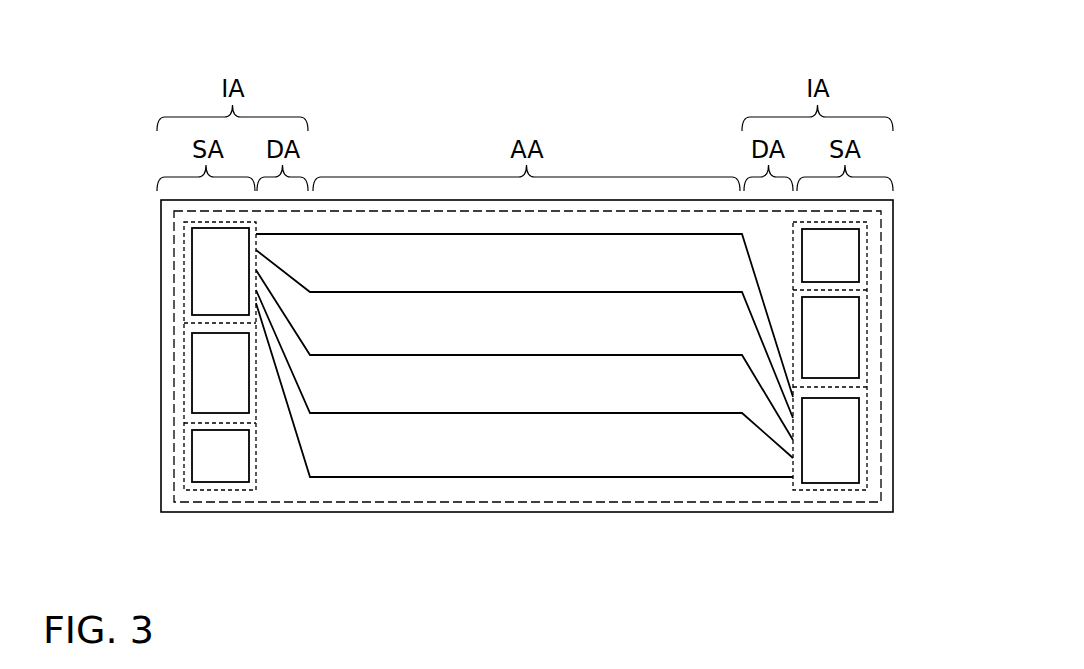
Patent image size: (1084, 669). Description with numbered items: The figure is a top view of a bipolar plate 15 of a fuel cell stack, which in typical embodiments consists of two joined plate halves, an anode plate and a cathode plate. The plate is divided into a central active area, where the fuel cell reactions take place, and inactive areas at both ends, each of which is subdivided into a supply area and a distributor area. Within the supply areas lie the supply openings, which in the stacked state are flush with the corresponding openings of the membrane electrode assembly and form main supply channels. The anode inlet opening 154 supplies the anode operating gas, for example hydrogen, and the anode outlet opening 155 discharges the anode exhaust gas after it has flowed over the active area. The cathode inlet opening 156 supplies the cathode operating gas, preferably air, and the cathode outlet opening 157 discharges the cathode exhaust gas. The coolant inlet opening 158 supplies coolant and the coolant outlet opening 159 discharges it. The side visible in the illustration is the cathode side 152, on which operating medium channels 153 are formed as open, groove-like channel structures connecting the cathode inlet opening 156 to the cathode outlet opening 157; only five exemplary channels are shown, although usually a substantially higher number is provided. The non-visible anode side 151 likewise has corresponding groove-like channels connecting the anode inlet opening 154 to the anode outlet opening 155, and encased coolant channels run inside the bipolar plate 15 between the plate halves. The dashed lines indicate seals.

The bipolar plate 15 is at (640, 76).
The anode side 151 is at (335, 535).
The cathode side 152 is at (526, 245).
The operating medium channels 153 is at (490, 413).
The anode inlet opening 154 is at (192, 450).
The anode outlet opening 155 is at (859, 263).
The cathode inlet opening 156 is at (192, 263).
The cathode outlet opening 157 is at (859, 450).
The coolant inlet opening 158 is at (192, 355).
The coolant outlet opening 159 is at (859, 355).